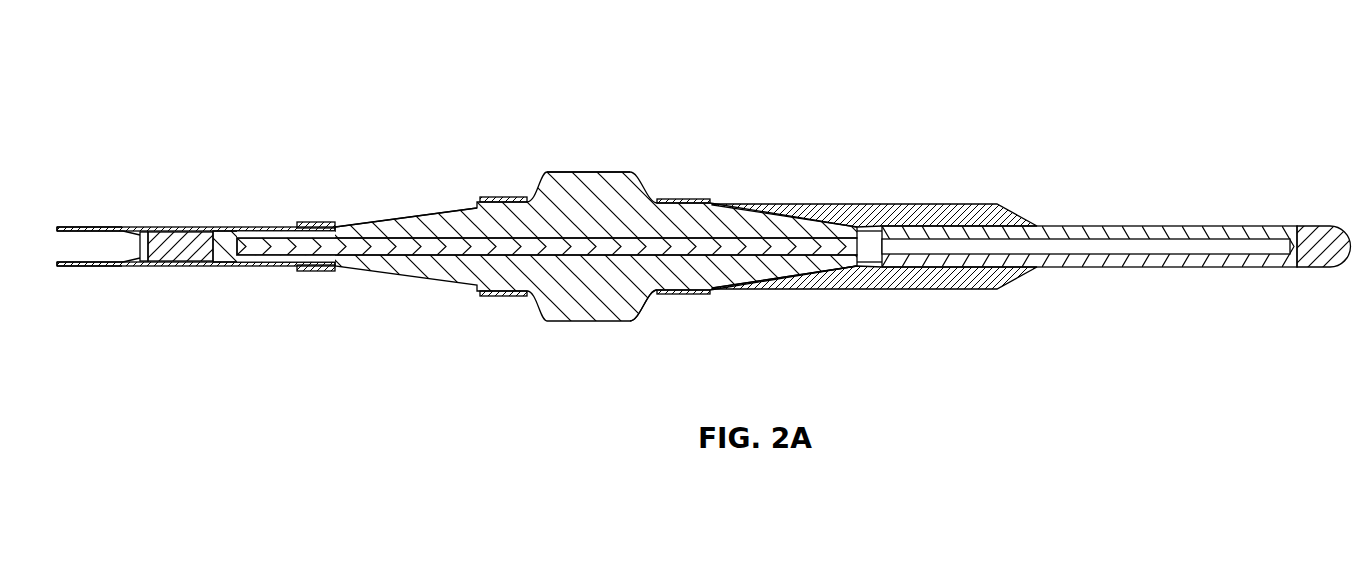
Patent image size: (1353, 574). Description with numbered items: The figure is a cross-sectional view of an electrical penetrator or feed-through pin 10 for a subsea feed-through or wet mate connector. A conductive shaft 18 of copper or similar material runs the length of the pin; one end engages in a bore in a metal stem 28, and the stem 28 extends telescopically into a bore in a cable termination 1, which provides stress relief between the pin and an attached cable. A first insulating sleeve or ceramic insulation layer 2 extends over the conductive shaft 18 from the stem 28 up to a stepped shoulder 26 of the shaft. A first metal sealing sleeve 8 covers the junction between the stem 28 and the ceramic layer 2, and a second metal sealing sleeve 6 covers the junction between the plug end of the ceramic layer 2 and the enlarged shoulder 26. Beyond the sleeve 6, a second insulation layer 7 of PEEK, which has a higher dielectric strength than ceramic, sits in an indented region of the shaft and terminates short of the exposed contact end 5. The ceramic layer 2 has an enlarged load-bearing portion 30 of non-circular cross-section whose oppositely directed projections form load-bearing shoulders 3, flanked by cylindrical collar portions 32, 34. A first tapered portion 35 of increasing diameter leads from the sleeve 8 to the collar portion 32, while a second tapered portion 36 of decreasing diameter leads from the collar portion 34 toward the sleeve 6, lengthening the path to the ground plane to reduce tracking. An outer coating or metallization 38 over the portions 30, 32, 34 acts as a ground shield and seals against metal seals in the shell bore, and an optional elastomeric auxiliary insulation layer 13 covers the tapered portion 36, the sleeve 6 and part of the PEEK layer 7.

The cable termination 1 is at (132, 226).
The ceramic insulation layer 2 is at (437, 273).
The load-bearing shoulders 3 is at (643, 302).
The contact end 5 is at (1320, 236).
The second metal sealing sleeve 6 is at (863, 228).
The second insulation layer 7 is at (1070, 232).
The first metal sealing sleeve 8 is at (307, 271).
The feed-through pin 10 is at (1262, 104).
The auxiliary insulation layer 13 is at (945, 215).
The conductive shaft 18 is at (717, 243).
The stepped shoulder 26 is at (872, 258).
The metal stem 28 is at (192, 250).
The enlarged load-bearing portion 30 is at (552, 322).
The cylindrical collar portion 32 is at (505, 198).
The cylindrical collar portion 34 is at (667, 198).
The first tapered portion 35 is at (413, 222).
The second tapered portion 36 is at (770, 278).
The outer coating 38 is at (612, 170).